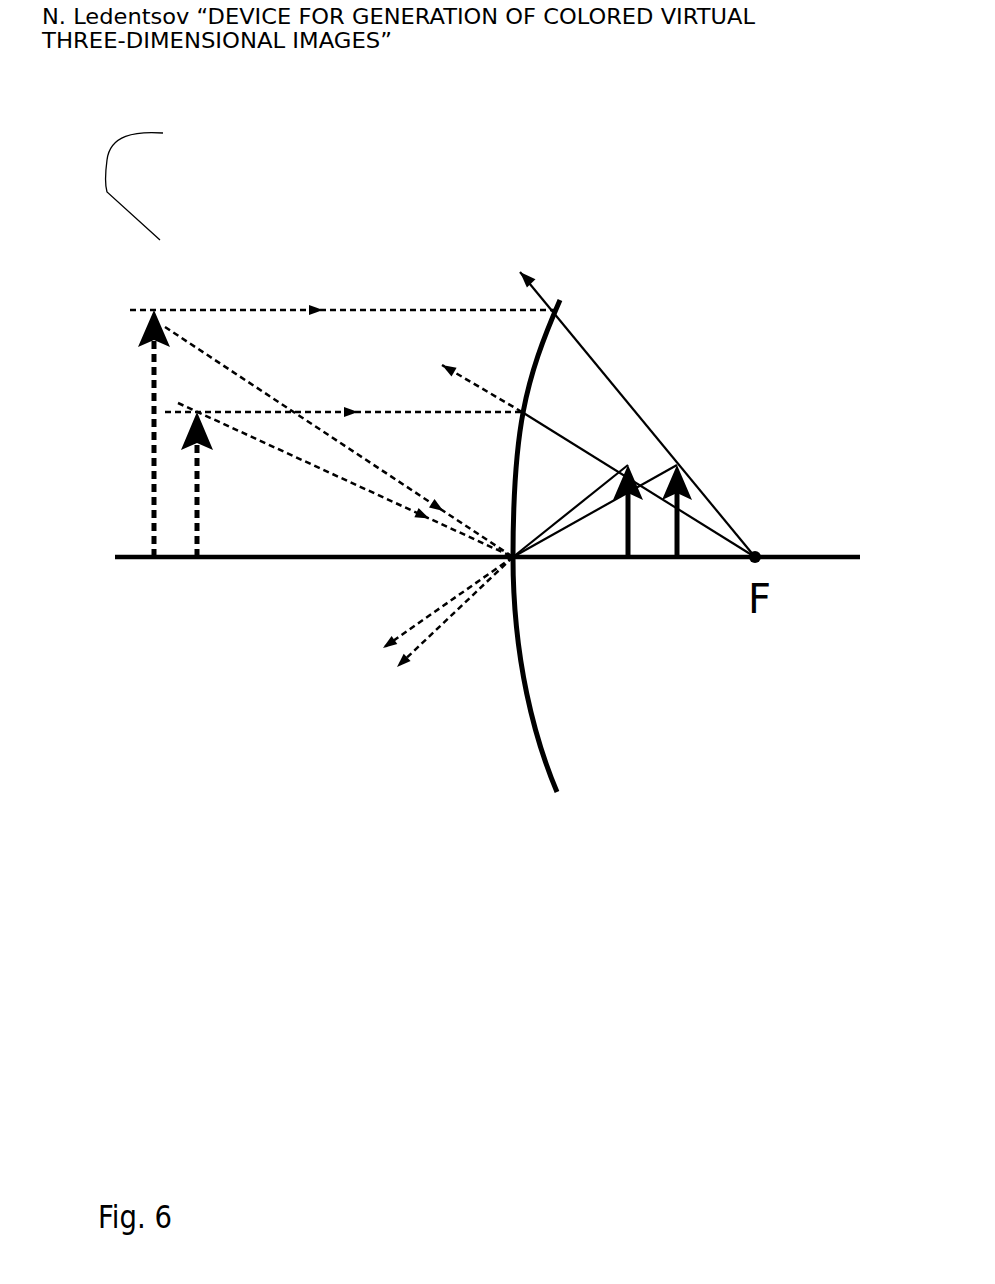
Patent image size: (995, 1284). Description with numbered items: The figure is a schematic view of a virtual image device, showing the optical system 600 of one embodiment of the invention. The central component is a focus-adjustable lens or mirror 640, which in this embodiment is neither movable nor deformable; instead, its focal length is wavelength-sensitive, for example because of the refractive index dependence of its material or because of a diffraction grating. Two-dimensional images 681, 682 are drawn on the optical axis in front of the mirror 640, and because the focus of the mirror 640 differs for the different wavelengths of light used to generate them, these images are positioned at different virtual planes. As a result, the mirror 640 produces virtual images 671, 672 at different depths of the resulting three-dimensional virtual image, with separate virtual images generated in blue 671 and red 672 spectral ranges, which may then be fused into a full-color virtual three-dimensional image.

The optical system 600 is at (131, 167).
The focus-adjustable mirror 640 is at (576, 556).
The virtual image at first depth 671 is at (225, 522).
The virtual image at second depth 672 is at (126, 471).
The first virtual two-dimensional image 681 is at (616, 564).
The second virtual two-dimensional image 682 is at (693, 564).